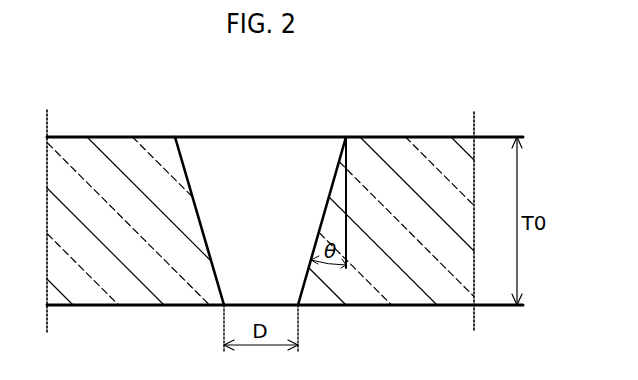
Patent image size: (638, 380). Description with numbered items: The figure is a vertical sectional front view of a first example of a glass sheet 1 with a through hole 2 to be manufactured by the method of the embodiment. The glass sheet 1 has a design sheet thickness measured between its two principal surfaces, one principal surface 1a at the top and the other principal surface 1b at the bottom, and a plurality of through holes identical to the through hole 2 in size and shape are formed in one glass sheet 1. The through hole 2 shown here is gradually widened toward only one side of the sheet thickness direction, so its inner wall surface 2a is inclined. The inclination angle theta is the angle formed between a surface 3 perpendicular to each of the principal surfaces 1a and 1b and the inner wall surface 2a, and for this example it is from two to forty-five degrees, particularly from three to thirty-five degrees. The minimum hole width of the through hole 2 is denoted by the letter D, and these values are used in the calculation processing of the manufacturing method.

The glass sheet 1 is at (107, 136).
The principal surface 1a is at (431, 135).
The principal surface 1b is at (413, 306).
The through hole 2 is at (245, 176).
The inner wall surface 2a is at (333, 178).
The surface perpendicular to principal surfaces 3 is at (348, 186).